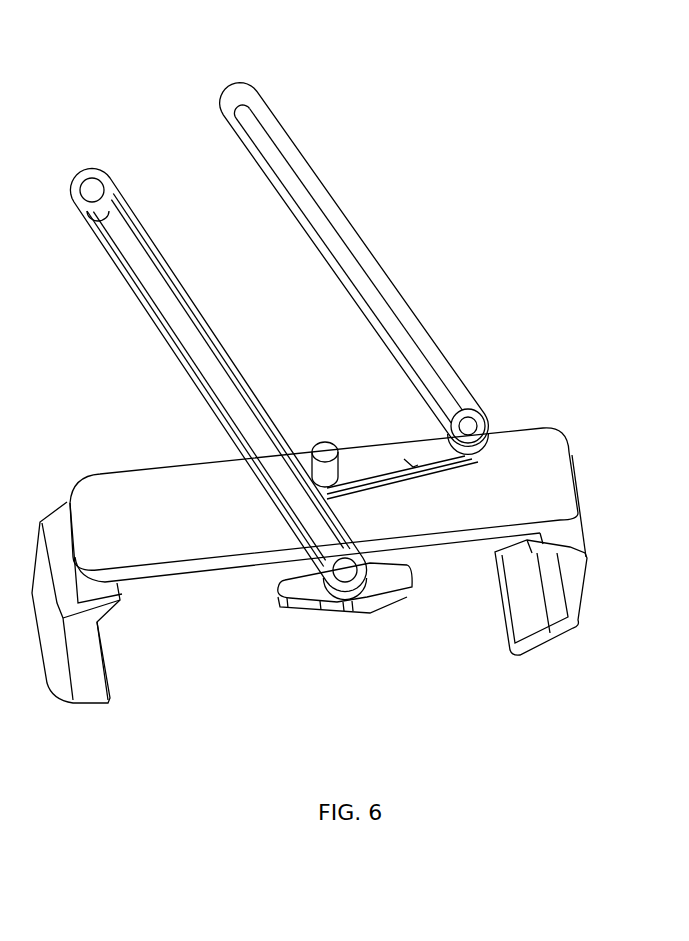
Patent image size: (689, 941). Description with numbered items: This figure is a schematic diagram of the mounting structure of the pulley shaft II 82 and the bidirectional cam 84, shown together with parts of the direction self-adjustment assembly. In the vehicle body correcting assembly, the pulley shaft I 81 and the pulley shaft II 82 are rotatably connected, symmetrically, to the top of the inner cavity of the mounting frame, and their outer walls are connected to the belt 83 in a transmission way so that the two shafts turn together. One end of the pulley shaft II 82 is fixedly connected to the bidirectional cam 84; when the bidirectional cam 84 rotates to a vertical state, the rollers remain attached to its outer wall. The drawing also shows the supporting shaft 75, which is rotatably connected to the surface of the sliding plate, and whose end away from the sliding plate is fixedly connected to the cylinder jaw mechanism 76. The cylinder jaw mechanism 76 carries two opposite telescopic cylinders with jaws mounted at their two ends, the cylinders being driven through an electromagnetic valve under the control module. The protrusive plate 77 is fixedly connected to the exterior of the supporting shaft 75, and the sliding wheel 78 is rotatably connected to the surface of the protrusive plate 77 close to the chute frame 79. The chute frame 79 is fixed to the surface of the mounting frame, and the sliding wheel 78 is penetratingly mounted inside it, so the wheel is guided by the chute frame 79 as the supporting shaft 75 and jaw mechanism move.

The supporting shaft 75 is at (328, 450).
The cylinder jaw mechanism 76 is at (190, 490).
The protrusive plate 77 is at (433, 478).
The sliding wheel 78 is at (472, 423).
The chute frame 79 is at (441, 367).
The pulley shaft I 81 is at (80, 200).
The pulley shaft II 82 is at (350, 574).
The belt 83 is at (137, 288).
The bidirectional cam 84 is at (321, 607).